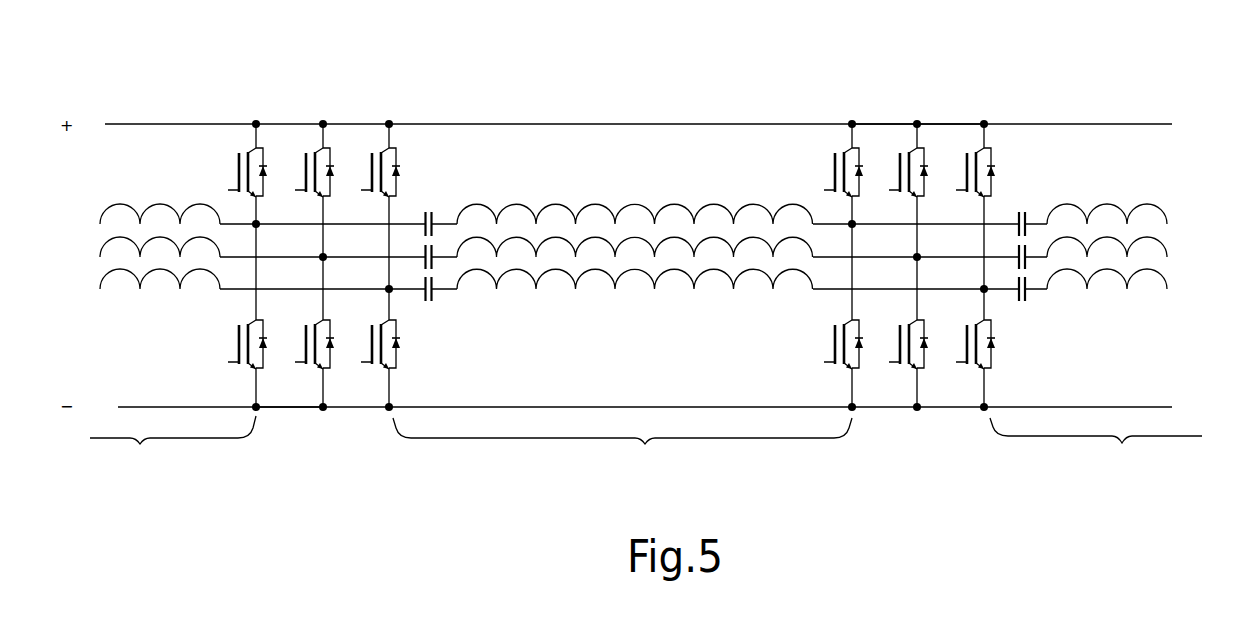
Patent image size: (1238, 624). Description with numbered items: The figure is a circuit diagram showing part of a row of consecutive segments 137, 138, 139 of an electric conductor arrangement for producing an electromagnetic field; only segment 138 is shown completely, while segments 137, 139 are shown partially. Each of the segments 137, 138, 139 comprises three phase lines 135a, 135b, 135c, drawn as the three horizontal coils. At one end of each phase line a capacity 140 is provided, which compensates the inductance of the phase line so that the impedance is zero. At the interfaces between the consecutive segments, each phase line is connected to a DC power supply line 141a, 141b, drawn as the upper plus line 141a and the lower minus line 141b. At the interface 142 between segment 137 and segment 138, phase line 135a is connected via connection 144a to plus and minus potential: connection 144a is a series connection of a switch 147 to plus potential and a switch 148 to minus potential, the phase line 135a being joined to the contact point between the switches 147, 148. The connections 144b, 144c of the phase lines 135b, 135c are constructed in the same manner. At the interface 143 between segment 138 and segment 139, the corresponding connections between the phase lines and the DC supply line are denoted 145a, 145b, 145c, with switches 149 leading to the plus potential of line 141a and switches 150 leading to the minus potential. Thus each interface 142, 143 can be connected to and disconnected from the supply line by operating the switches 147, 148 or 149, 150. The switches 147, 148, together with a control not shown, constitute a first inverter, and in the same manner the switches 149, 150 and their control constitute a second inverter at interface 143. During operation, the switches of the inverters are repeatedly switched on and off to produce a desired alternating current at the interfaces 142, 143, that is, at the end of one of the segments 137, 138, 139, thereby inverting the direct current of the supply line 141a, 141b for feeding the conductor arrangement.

The phase line 135a is at (478, 205).
The phase line 135b is at (596, 239).
The phase line 135c is at (598, 272).
The segment 137 is at (173, 347).
The segment 138 is at (622, 454).
The segment 139 is at (1096, 345).
The capacity 140 is at (436, 196).
The DC power supply line 141a is at (442, 124).
The DC power supply line 141b is at (890, 408).
The interface 142 is at (316, 441).
The interface 143 is at (916, 110).
The connection 144a is at (229, 234).
The connection 144b is at (323, 224).
The connection 144c is at (393, 372).
The connection 145a is at (852, 145).
The connection 145b is at (918, 145).
The connection 145c is at (1053, 265).
The switch 147 is at (222, 171).
The switch 148 is at (222, 348).
The switch 149 is at (1016, 166).
The switch 150 is at (1018, 336).